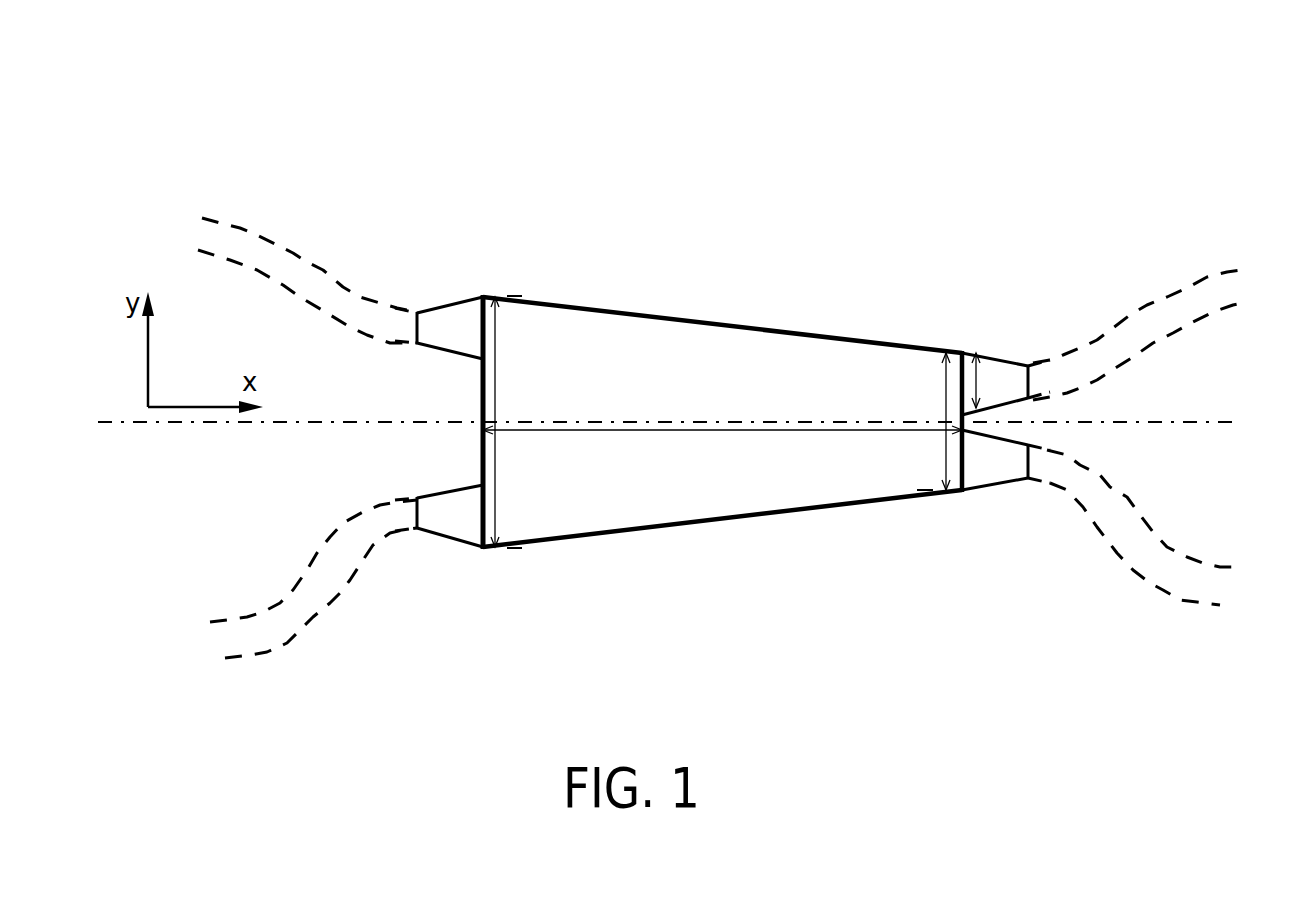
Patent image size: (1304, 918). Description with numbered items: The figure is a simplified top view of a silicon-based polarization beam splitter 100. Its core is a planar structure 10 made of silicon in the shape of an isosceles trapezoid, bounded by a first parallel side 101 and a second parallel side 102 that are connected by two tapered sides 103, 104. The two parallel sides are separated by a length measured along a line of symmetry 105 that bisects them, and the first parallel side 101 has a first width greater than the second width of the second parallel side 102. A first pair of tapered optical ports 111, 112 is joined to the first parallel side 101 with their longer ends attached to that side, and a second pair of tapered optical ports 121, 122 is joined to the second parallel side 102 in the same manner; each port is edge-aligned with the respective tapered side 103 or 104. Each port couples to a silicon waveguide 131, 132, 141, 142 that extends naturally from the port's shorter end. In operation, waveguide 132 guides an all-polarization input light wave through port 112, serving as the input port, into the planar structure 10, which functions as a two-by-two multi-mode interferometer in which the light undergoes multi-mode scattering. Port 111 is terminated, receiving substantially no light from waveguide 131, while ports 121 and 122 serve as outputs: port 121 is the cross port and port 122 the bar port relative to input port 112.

The silicon-based polarization beam splitter 100 is at (713, 108).
The planar structure 10 is at (722, 439).
The first parallel side 101 is at (485, 393).
The second parallel side 102 is at (960, 417).
The tapered side 103 is at (843, 338).
The tapered side 104 is at (675, 525).
The line of symmetry 105 is at (250, 420).
The optical port 111 is at (453, 318).
The optical port 112 is at (455, 525).
The optical port 121 is at (1020, 353).
The optical port 122 is at (1002, 470).
The silicon waveguide 131 is at (287, 263).
The silicon waveguide 132 is at (318, 603).
The silicon waveguide 141 is at (1168, 307).
The silicon waveguide 142 is at (1125, 545).